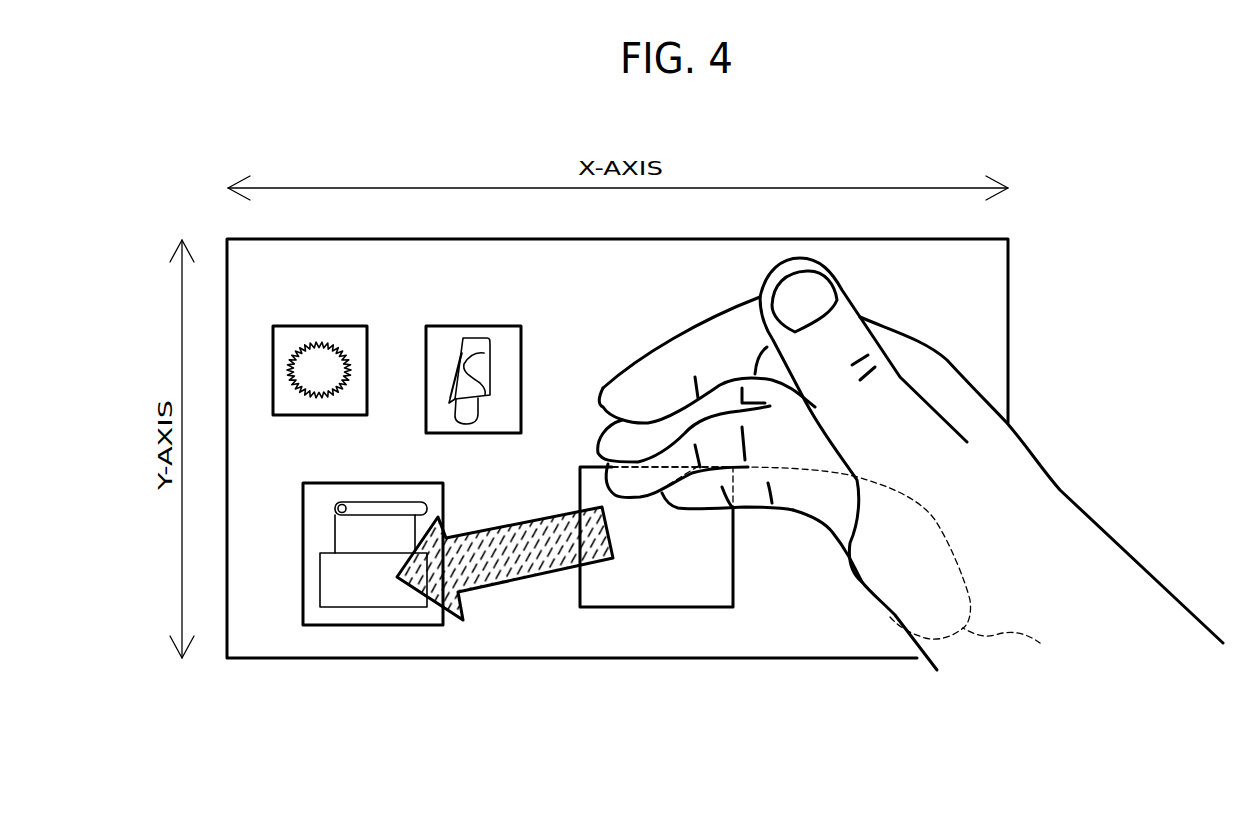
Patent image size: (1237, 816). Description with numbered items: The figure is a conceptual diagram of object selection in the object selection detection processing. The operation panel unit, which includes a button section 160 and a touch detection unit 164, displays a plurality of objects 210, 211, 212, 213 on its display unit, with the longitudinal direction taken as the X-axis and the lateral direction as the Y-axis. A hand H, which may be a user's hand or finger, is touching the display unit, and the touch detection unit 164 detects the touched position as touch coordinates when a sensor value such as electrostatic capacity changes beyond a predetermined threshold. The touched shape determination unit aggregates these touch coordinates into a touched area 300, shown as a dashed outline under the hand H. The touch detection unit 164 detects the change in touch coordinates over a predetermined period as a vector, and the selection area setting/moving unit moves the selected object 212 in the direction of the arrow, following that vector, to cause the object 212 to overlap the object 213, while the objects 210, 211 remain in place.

The button section 160 is at (699, 440).
The touch detection unit 164 is at (1010, 287).
The object 210 is at (320, 326).
The object 211 is at (473, 326).
The object 212 is at (579, 500).
The object 213 is at (396, 483).
The touched area 300 is at (853, 569).
The hand H is at (1040, 467).